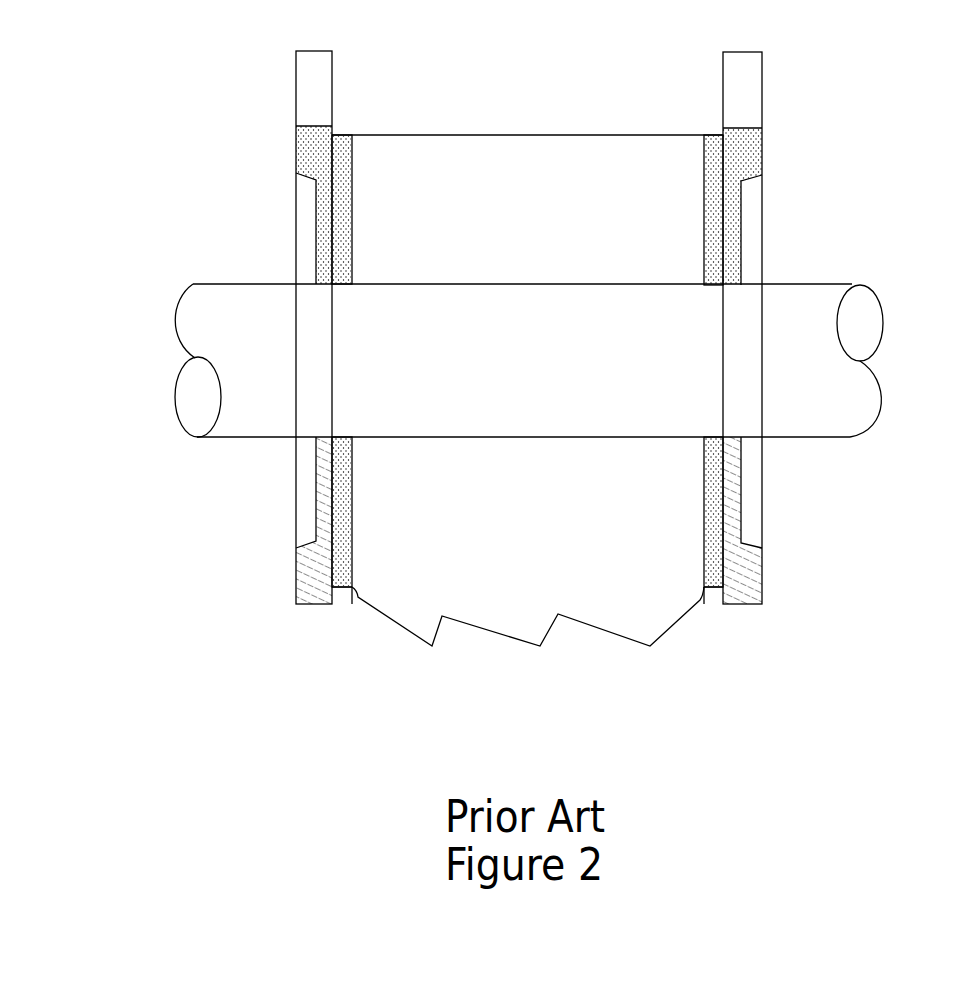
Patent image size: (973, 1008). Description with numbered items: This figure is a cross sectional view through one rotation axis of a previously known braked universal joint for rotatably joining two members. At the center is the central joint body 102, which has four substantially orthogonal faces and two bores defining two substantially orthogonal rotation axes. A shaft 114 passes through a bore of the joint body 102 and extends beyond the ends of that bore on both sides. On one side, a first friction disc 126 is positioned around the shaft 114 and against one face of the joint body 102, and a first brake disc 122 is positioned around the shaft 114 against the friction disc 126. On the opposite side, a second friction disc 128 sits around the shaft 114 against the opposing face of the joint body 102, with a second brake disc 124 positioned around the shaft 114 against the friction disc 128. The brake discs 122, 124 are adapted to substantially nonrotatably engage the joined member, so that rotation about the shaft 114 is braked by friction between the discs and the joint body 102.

The central joint body 102 is at (505, 205).
The shaft 114 is at (718, 367).
The first brake disc 122 is at (310, 153).
The second brake disc 124 is at (748, 150).
The first friction disc 126 is at (340, 202).
The second friction disc 128 is at (712, 190).